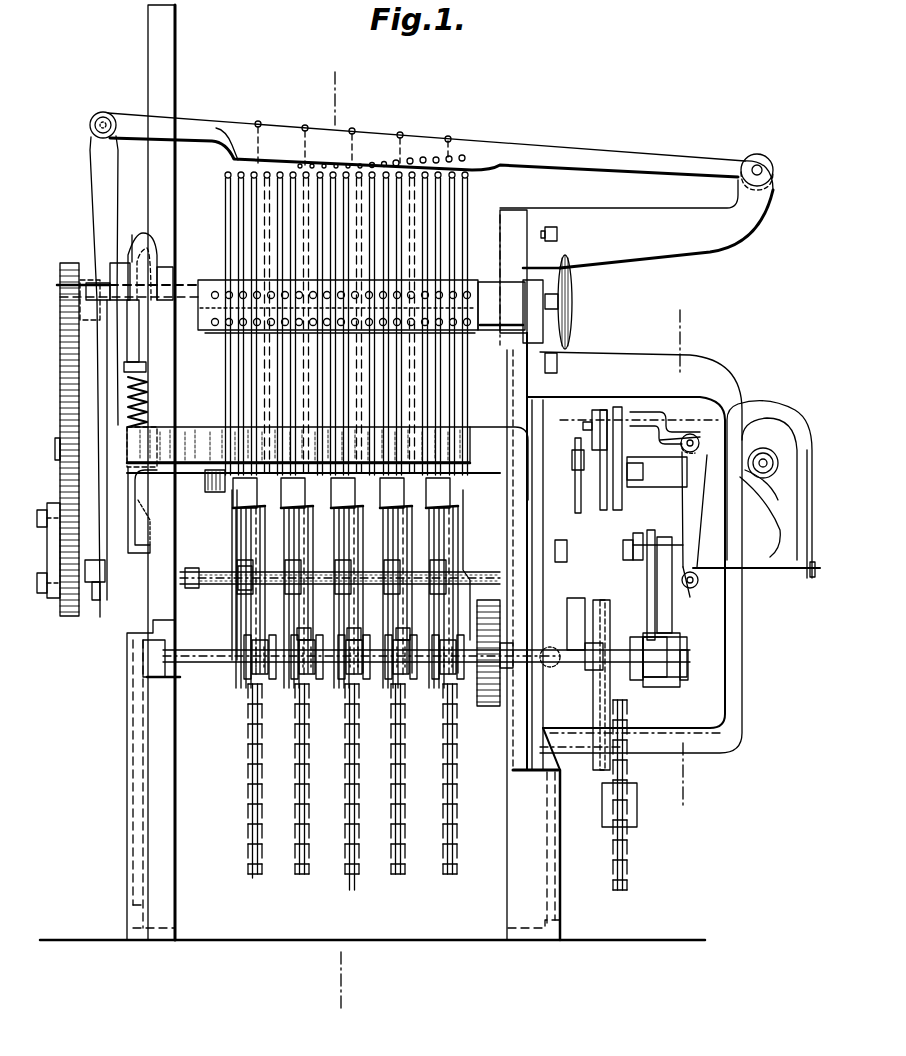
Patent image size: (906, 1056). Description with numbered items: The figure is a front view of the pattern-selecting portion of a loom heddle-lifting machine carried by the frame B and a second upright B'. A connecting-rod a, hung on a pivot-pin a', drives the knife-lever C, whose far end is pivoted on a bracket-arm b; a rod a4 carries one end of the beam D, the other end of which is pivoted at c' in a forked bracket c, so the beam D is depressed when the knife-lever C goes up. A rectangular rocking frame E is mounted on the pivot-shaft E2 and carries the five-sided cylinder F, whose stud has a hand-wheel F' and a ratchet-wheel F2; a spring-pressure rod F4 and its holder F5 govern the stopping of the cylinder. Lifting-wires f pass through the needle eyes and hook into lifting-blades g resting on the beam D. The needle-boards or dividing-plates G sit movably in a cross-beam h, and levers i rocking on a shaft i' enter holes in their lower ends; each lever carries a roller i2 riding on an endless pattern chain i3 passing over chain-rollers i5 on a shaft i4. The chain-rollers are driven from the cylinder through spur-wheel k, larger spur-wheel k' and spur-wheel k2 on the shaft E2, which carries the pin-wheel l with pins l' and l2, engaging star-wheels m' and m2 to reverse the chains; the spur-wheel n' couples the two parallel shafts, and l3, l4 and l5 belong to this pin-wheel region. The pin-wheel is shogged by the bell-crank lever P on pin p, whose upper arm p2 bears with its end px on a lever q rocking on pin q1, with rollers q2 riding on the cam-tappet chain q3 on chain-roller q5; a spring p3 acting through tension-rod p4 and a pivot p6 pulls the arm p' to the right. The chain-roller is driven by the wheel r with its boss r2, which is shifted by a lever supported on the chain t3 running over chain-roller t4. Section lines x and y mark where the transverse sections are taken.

The frame B is at (147, 472).
The second standard B' is at (519, 645).
The connecting-rod a is at (94, 356).
The pivot-pin a' is at (338, 339).
The rod a4 is at (214, 470).
The bracket-arm b is at (757, 220).
The knife-lever C is at (420, 143).
The forked bracket c is at (760, 517).
The pivot c' is at (767, 448).
The beam D is at (745, 455).
The rocking frame E is at (113, 403).
The pivot-shaft E2 is at (760, 533).
The cylinder F is at (361, 290).
The hand-wheel F' is at (543, 291).
The ratchet-wheel F2 is at (162, 298).
The spring-pressure rod F4 is at (133, 353).
The cam block F5 is at (132, 248).
The lifting-wires f is at (260, 123).
The needle-boards or dividing-plates G is at (345, 583).
The lifting-blades g is at (232, 618).
The cross-beam h is at (164, 462).
The levers i is at (232, 575).
The shaft i' is at (340, 591).
The roller or bowl i2 is at (397, 613).
The endless chain i3 is at (258, 788).
The shaft i4 is at (705, 660).
The chain-rollers i5 is at (425, 668).
The spur-wheel k is at (57, 439).
The spur-wheel k' is at (68, 370).
The spur-wheel k2 is at (90, 607).
The pin-wheel l is at (651, 573).
The pin l' is at (642, 553).
The pin l2 is at (665, 622).
The lever pin l3 is at (642, 550).
The lever bar l4 is at (662, 547).
The lever pivot l5 is at (686, 598).
The star-wheel m' is at (623, 677).
The star-wheel m2 is at (685, 693).
The spur-wheel n' is at (484, 675).
The bell-crank lever P is at (690, 470).
The pin p is at (691, 425).
The lever-arm p' is at (693, 530).
The upper arm p2 is at (656, 436).
The spring p3 is at (808, 512).
The tension-rod p4 is at (787, 572).
The rod pivot p6 is at (747, 590).
The end of upper arm px is at (632, 413).
The lever q is at (613, 420).
The pin q1 is at (572, 440).
The rollers q2 is at (594, 416).
The endless chain q3 is at (589, 471).
The chain-roller q5 is at (657, 502).
The wheel r is at (567, 610).
The projecting rim or boss r2 is at (563, 548).
The endless chain t3 is at (627, 776).
The chain-roller t4 is at (601, 685).
The section line x x is at (689, 558).
The section line y y is at (349, 536).